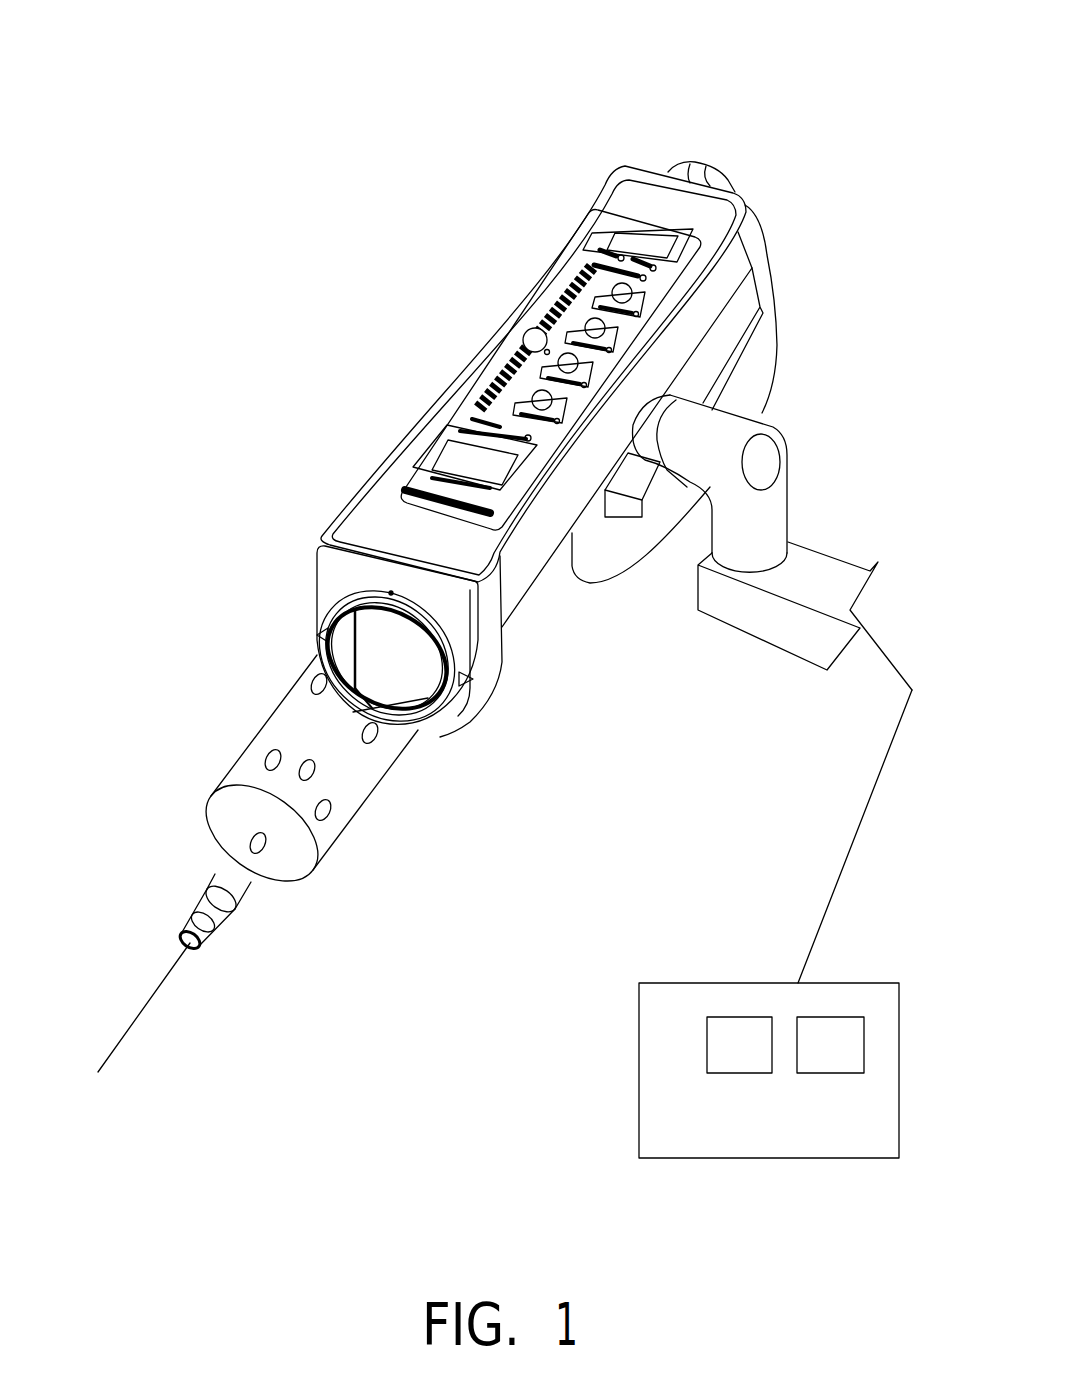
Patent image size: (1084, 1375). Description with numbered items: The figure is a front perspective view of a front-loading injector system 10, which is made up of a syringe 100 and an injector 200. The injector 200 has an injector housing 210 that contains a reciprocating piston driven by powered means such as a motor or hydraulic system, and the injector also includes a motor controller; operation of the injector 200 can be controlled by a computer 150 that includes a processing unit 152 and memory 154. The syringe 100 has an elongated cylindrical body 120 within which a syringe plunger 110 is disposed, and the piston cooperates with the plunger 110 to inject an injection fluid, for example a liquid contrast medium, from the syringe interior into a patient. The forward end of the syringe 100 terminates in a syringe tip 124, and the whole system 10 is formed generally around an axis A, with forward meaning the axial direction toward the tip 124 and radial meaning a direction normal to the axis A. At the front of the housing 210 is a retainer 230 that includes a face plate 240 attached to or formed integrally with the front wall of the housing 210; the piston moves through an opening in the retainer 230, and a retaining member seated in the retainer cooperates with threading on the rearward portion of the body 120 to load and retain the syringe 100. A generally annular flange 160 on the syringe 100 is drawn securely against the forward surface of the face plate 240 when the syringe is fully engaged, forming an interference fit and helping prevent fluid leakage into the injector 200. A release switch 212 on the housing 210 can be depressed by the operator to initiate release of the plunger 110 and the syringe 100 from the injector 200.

The front-loading injector system 10 is at (450, 98).
The syringe 100 is at (368, 810).
The syringe plunger 110 is at (382, 680).
The elongated cylindrical body 120 is at (273, 707).
The syringe tip 124 is at (197, 948).
The computer 150 is at (752, 1163).
The processing unit 152 is at (858, 1057).
The memory 154 is at (768, 1057).
The annular flange 160 is at (447, 687).
The injector 200 is at (532, 648).
The injector housing 210 is at (525, 552).
The release switch 212 is at (522, 398).
The retainer 230 is at (475, 640).
The face plate 240 is at (332, 578).
The axis A is at (147, 1007).